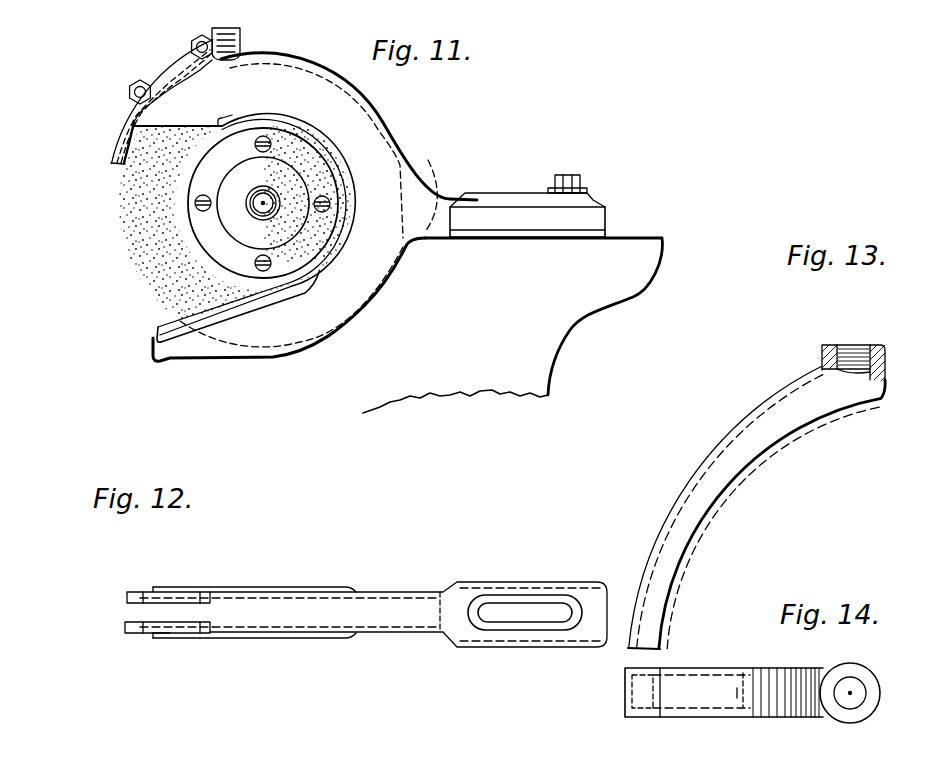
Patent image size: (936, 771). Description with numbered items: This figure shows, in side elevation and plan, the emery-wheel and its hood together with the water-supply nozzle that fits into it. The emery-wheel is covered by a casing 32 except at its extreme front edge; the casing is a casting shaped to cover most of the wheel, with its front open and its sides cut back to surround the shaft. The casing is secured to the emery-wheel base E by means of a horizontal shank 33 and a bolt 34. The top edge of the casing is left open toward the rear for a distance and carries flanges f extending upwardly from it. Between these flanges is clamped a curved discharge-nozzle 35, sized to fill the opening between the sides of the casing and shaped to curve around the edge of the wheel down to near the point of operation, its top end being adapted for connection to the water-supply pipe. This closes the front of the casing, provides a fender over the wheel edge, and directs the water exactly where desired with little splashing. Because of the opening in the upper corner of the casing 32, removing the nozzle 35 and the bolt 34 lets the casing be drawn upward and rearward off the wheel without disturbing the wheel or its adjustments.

In FIG. 11, the casing 32 is at (249, 306).
In FIG. 12, the casing 32 is at (353, 603).
In FIG. 11, the horizontal shank 33 is at (520, 184).
In FIG. 11, the bolt 34 is at (571, 174).
In FIG. 11, the curved discharge-nozzle 35 is at (108, 152).
In FIG. 13, the curved discharge-nozzle 35 is at (693, 480).
In FIG. 14, the curved discharge-nozzle 35 is at (752, 683).
In FIG. 11, the flanges f is at (190, 53).
In FIG. 12, the flanges f is at (152, 634).
In FIG. 11, the emery-wheel base E is at (512, 325).